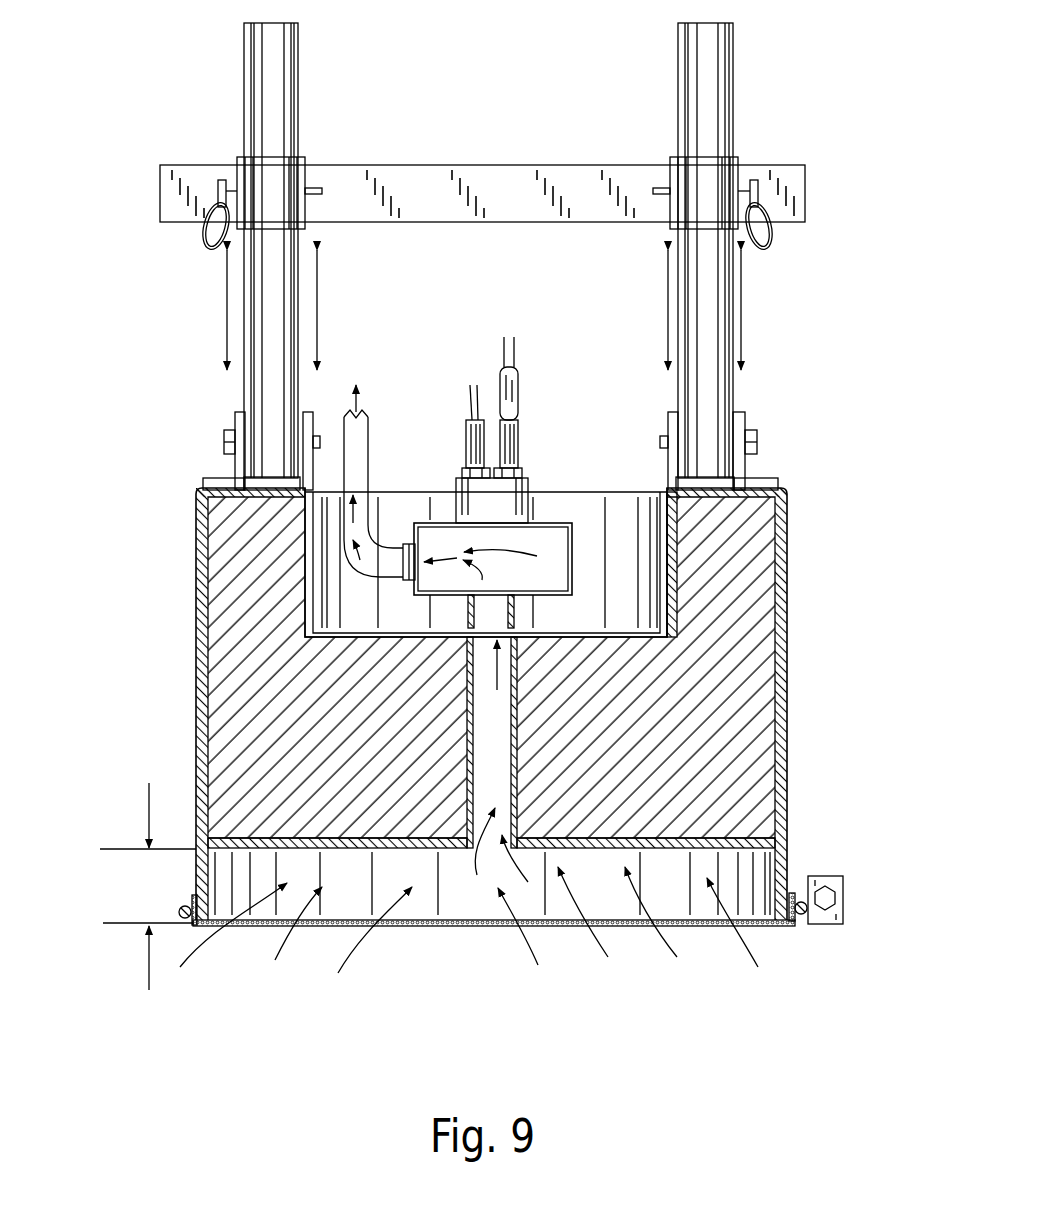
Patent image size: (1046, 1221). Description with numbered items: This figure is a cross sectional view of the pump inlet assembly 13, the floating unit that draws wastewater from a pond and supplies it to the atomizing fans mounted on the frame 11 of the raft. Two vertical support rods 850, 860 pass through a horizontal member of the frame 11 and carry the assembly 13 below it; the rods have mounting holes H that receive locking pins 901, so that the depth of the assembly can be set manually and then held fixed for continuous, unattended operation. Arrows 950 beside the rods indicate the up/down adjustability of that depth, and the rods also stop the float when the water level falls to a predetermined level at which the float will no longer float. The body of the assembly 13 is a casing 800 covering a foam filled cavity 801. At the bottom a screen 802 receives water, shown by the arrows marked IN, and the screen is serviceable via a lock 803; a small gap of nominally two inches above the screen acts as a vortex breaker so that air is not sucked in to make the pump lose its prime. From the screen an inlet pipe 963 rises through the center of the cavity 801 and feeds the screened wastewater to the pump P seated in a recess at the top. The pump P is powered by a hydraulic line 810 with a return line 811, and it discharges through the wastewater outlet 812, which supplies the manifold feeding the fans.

The support rod 850 is at (275, 63).
The support rod 860 is at (684, 43).
The mounting holes H is at (244, 130).
The frame 11 is at (425, 208).
The locking pins 901 is at (215, 183).
The arrows 950 is at (229, 322).
The pump inlet assembly 13 is at (124, 472).
The casing 800 is at (787, 530).
The foam filled cavity 801 is at (726, 683).
The inlet pipe 963 is at (470, 718).
The screen 802 is at (457, 926).
The lock 803 is at (830, 895).
The wastewater outlet 812 is at (370, 460).
The pump P is at (558, 523).
The return line 811 is at (457, 366).
The hydraulic line 810 is at (509, 348).